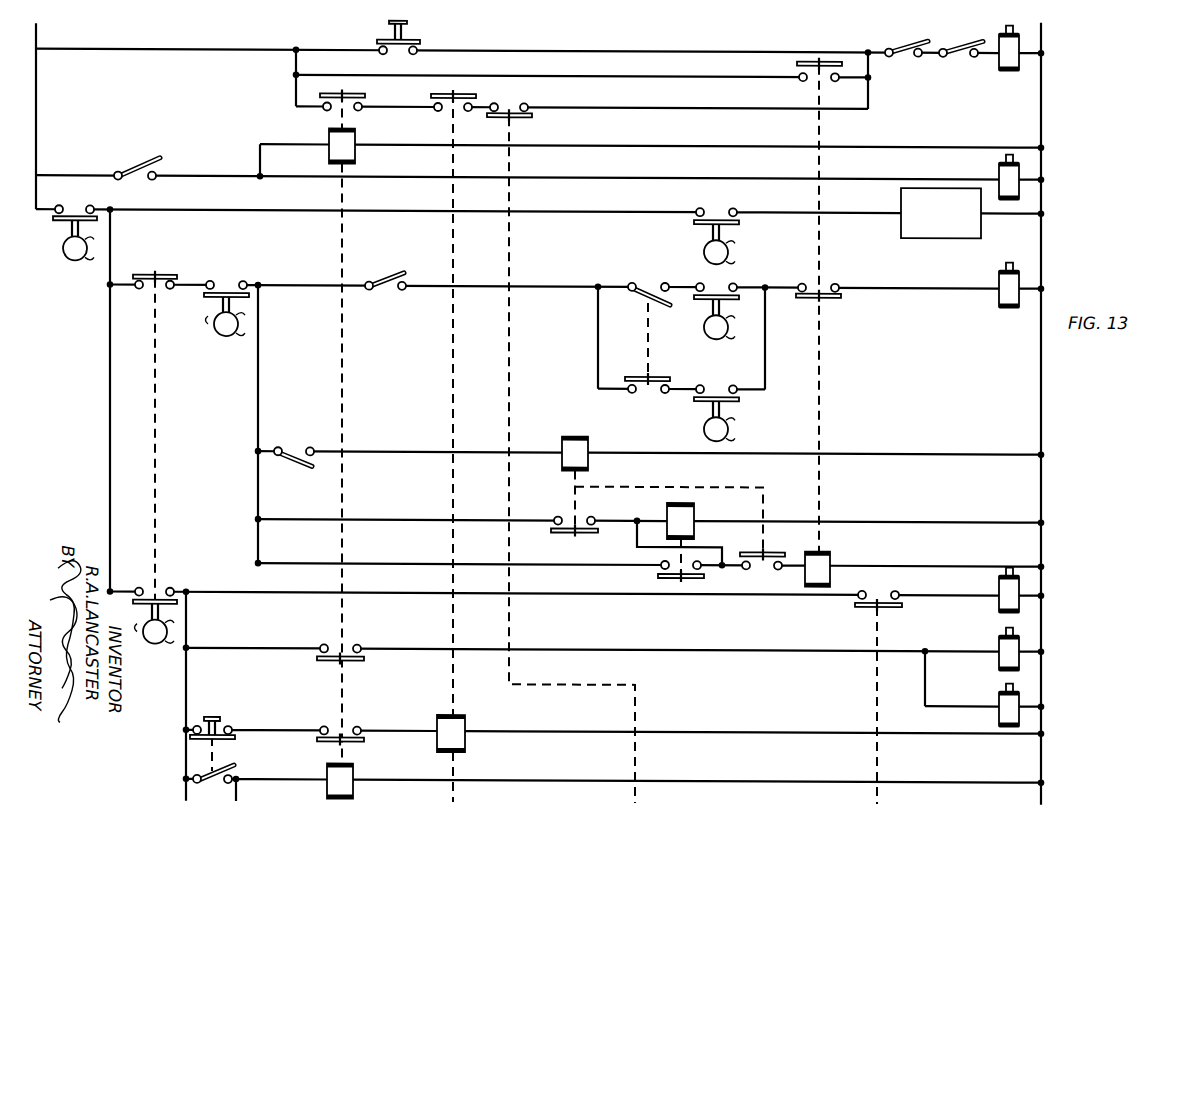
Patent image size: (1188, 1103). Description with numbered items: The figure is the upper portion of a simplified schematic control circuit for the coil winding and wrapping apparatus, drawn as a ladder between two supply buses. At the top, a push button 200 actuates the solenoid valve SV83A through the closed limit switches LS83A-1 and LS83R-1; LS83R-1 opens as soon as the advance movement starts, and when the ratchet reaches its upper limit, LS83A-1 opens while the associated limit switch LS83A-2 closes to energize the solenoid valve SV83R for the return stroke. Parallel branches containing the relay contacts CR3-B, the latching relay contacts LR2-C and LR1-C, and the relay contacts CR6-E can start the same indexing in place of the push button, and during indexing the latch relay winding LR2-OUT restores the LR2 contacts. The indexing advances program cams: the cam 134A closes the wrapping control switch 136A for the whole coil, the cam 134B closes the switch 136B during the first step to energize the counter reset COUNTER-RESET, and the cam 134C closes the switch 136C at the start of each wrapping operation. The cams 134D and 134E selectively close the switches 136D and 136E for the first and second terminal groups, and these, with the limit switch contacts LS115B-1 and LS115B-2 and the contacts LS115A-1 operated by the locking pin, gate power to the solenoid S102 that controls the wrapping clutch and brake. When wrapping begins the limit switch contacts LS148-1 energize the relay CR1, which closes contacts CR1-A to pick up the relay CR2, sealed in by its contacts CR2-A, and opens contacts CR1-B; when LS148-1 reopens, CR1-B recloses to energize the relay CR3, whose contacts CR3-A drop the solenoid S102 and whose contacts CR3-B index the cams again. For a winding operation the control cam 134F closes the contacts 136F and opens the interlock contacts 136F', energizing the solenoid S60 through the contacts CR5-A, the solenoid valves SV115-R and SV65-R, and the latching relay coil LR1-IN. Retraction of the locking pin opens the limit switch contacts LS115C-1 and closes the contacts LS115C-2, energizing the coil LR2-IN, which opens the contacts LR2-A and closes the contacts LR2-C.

The push button 200 is at (421, 40).
The wrapping control switch 136A is at (74, 214).
The cam 134A is at (64, 256).
The contacts 136F' is at (155, 263).
The wrapping control switch 136C is at (226, 288).
The cam 134C is at (215, 335).
The wrapping control switch 136B is at (722, 190).
The cam 134B is at (704, 250).
The switch 136D is at (712, 284).
The cam 134D is at (704, 334).
The switch 136E is at (722, 370).
The cam 134E is at (708, 432).
The contacts 136F is at (170, 577).
The control cam 134F is at (167, 634).
The latching relay contacts LR2-C is at (365, 82).
The relay contact LR1-C is at (466, 90).
The relay contacts CR6-E is at (528, 101).
The relay contacts CR3-B is at (800, 58).
The limit switch LS83A-1 is at (930, 40).
The limit switch LS83R-1 is at (957, 40).
The solenoid valve SV83A is at (999, 60).
The solenoid valve SV83R is at (999, 169).
The counter reset COUNTER-RESET is at (941, 213).
The solenoid S102 is at (999, 282).
The limit switch LS83A-2 is at (160, 138).
The latch relay winding LR2-OUT is at (343, 145).
The limit switch contacts LS115A-1 is at (392, 258).
The limit switch contacts LS115B-1 is at (599, 281).
The limit switch contacts LS115B-2 is at (633, 375).
The relay contacts CR3-A is at (836, 294).
The limit switch contacts LS148-1 is at (302, 435).
The relay CR1 is at (575, 454).
The relay contacts CR1-A is at (558, 532).
The relay CR2 is at (680, 521).
The relay contacts CR2-A is at (658, 573).
The relay contacts CR1-B is at (762, 566).
The relay CR3 is at (817, 569).
The relay contacts CR5-A is at (862, 605).
The solenoid S60 is at (994, 584).
The solenoid valve SV115-R is at (999, 646).
The solenoid valve SV65-R is at (999, 701).
The latching relay contacts LR2-A is at (330, 647).
The limit switch contacts LS115C-1 is at (228, 700).
The latching relay operating coil LR1-IN is at (451, 733).
The limit switch contacts LS115C-2 is at (262, 762).
The latching relay operating coil LR2-IN is at (340, 780).